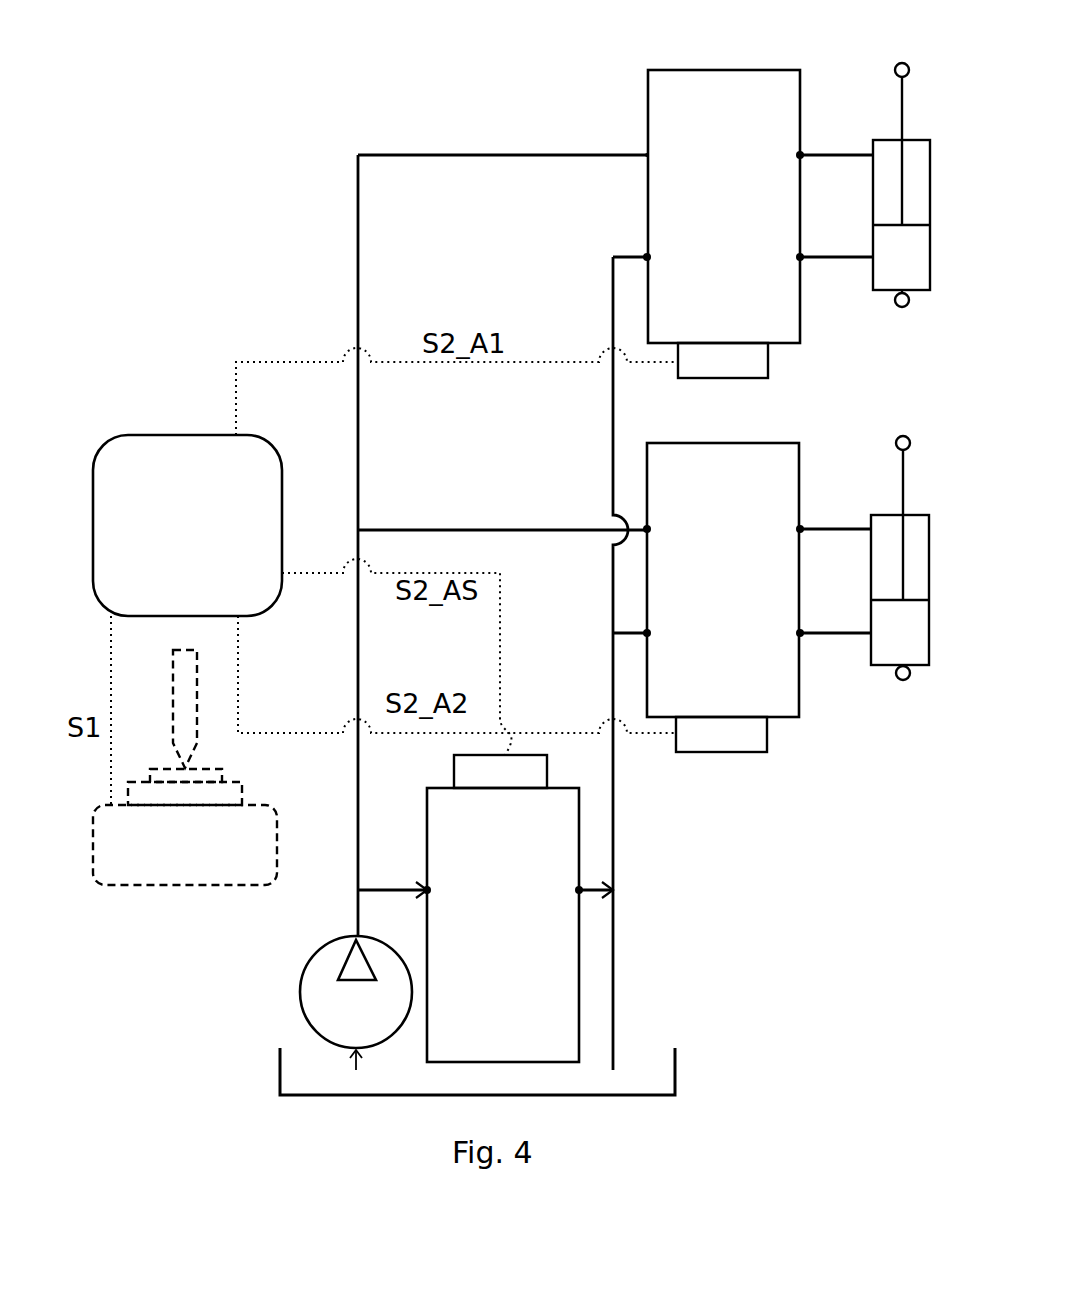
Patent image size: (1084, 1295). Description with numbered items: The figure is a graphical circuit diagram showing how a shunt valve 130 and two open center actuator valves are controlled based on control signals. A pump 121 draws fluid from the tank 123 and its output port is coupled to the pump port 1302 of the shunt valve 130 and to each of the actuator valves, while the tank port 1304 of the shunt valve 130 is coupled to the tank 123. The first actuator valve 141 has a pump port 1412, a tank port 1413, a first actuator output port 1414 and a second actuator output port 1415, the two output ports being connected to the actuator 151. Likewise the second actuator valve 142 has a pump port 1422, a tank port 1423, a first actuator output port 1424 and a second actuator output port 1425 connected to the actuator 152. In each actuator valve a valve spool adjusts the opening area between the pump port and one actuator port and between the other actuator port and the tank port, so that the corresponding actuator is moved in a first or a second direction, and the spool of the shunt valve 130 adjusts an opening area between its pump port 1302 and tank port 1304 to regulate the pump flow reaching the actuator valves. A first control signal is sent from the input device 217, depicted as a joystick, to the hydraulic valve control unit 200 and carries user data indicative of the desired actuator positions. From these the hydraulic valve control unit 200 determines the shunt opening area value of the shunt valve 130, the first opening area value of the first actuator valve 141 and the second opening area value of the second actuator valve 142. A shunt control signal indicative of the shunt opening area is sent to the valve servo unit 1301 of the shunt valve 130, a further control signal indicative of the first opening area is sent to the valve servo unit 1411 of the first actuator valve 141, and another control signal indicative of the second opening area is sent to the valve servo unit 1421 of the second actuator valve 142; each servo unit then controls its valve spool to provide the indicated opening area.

The first actuator valve 141 is at (724, 206).
The valve servo unit 1411 is at (723, 361).
The pump port 1412 is at (655, 131).
The tank port 1413 is at (655, 237).
The first actuator output port 1414 is at (803, 150).
The second actuator output port 1415 is at (801, 262).
The actuator 151 is at (901, 204).
The second actuator valve 142 is at (723, 580).
The valve servo unit 1421 is at (721, 735).
The pump port 1422 is at (655, 514).
The tank port 1423 is at (655, 617).
The first actuator output port 1424 is at (803, 525).
The second actuator output port 1425 is at (801, 637).
The actuator 152 is at (900, 575).
The hydraulic valve control unit 200 is at (187, 525).
The input device 217 is at (185, 767).
The shunt valve 130 is at (503, 925).
The valve servo unit 1301 is at (500, 772).
The pump port 1302 is at (451, 882).
The tank port 1304 is at (577, 897).
The pump 121 is at (356, 1003).
The tank 123 is at (679, 1072).